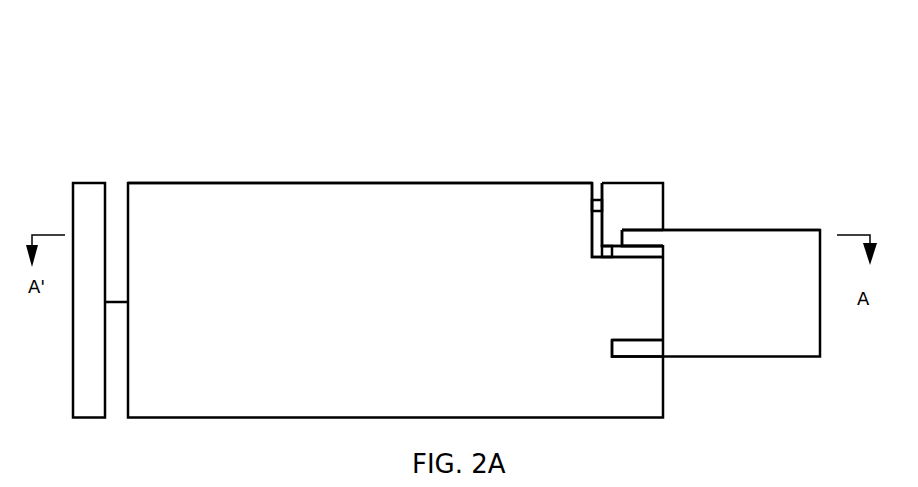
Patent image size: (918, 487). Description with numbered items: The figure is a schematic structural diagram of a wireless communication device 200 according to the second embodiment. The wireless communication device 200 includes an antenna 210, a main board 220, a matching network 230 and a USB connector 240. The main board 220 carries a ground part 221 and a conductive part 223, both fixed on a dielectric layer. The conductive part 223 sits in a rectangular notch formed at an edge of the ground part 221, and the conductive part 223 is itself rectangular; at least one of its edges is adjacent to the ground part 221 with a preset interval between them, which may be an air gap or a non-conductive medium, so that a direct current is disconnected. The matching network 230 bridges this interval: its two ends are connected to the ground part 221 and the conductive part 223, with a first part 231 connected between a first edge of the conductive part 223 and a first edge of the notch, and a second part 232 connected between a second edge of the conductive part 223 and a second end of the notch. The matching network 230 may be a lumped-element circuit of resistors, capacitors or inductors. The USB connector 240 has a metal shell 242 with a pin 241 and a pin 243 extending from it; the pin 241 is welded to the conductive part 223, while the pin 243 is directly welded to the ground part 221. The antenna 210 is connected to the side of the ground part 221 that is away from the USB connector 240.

The wireless communication device 200 is at (421, 45).
The antenna 210 is at (97, 183).
The main board 220 is at (338, 143).
The ground part 221 is at (188, 183).
The conductive part 223 is at (630, 183).
The matching network 230 is at (501, 286).
The first part 231 is at (582, 212).
The second part 232 is at (592, 255).
The USB connector 240 is at (790, 180).
The pin 241 is at (655, 230).
The metal shell 242 is at (682, 230).
The pin 243 is at (642, 357).